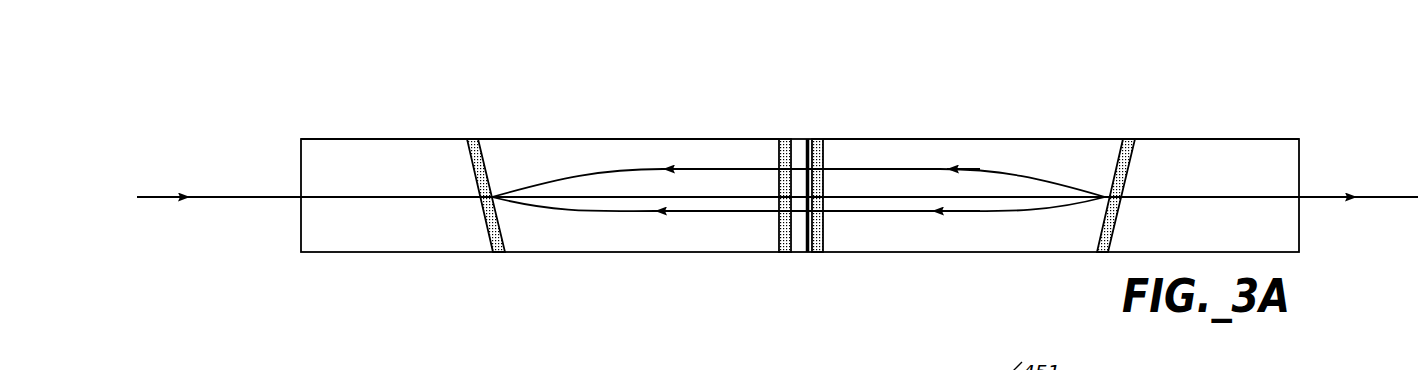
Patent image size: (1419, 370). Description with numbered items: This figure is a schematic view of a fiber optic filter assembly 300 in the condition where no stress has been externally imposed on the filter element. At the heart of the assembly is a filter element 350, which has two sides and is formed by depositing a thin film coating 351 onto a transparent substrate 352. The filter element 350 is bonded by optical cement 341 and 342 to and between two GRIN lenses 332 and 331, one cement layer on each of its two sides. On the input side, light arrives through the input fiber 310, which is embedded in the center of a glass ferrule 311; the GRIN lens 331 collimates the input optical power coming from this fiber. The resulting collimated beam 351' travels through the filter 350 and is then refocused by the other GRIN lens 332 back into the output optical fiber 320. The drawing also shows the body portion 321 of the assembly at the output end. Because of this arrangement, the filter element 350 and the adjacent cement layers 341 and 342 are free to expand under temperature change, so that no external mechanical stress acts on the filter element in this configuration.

The fiber optic filter assembly 300 is at (1147, 45).
The input fiber 310 is at (746, 97).
The glass ferrule 311 is at (1210, 132).
The output optical fiber 320 is at (262, 188).
The second body portion 321 is at (375, 132).
The GRIN lens 331 is at (992, 132).
The GRIN lens 332 is at (633, 132).
The optical cement 341 is at (785, 262).
The optical cement 342 is at (818, 262).
The filter element 350 is at (801, 186).
The thin film coating 351 is at (846, 167).
The collimated beam 351' is at (798, 242).
The transparent substrate 352 is at (696, 222).